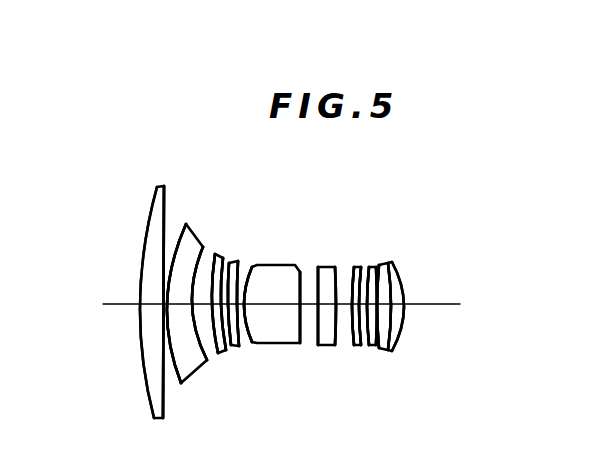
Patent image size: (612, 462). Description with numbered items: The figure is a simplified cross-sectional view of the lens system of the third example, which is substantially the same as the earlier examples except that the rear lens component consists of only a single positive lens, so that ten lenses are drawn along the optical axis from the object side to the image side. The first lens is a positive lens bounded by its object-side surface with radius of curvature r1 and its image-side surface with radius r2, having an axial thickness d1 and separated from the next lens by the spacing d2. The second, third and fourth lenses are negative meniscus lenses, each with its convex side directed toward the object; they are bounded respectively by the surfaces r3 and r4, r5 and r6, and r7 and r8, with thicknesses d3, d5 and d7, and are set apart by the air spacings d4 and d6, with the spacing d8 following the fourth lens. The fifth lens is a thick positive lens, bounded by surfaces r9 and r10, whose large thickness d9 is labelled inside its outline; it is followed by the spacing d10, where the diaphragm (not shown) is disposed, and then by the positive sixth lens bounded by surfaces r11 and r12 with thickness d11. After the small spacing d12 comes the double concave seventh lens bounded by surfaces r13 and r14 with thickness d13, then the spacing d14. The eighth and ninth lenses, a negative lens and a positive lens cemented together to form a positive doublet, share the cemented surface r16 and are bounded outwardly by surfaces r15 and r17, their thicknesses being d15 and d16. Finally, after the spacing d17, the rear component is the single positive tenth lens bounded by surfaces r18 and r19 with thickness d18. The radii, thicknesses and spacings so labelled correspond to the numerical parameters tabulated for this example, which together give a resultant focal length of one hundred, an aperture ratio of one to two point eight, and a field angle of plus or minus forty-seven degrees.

The radius of curvature of the first surface r1 is at (153, 216).
The radius of curvature of the second surface r2 is at (164, 187).
The radius of curvature of the third surface r3 is at (186, 225).
The radius of curvature of the fourth surface r4 is at (203, 247).
The radius of curvature of the fifth surface r5 is at (215, 254).
The radius of curvature of the sixth surface r6 is at (223, 258).
The radius of curvature of the seventh surface r7 is at (227, 262).
The radius of curvature of the eighth surface r8 is at (239, 262).
The radius of curvature of the ninth surface r9 is at (252, 267).
The radius of curvature of the tenth surface r10 is at (297, 265).
The radius of curvature of the eleventh surface r11 is at (318, 267).
The radius of curvature of the twelfth surface r12 is at (335, 267).
The radius of curvature of the thirteenth surface r13 is at (354, 267).
The radius of curvature of the fourteenth surface r14 is at (361, 267).
The radius of curvature of the fifteenth surface r15 is at (369, 267).
The radius of curvature of the sixteenth surface r16 is at (377, 266).
The radius of curvature of the seventeenth surface r17 is at (380, 265).
The radius of curvature of the eighteenth surface r18 is at (394, 263).
The radius of curvature of the nineteenth surface r19 is at (406, 287).
The thickness of the first lens d1 is at (157, 304).
The spacing between the first and second lenses d2 is at (160, 312).
The thickness of the second lens d3 is at (183, 384).
The spacing between the second and third lenses d4 is at (210, 364).
The thickness of the third lens d5 is at (225, 353).
The spacing between the third and fourth lenses d6 is at (230, 352).
The thickness of the fourth lens d7 is at (236, 347).
The spacing between the fourth and fifth lenses d8 is at (244, 345).
The thickness of the fifth lens d9 is at (270, 306).
The spacing between the fifth and sixth lenses d10 is at (304, 306).
The thickness of the sixth lens d11 is at (328, 346).
The spacing between the sixth and seventh lenses d12 is at (348, 346).
The thickness of the seventh lens d13 is at (363, 346).
The spacing between the seventh and eighth lenses d14 is at (372, 347).
The thickness of the eighth lens d15 is at (374, 346).
The thickness of the ninth lens d16 is at (386, 350).
The spacing between the ninth and tenth lenses d17 is at (388, 348).
The thickness of the tenth lens d18 is at (410, 318).